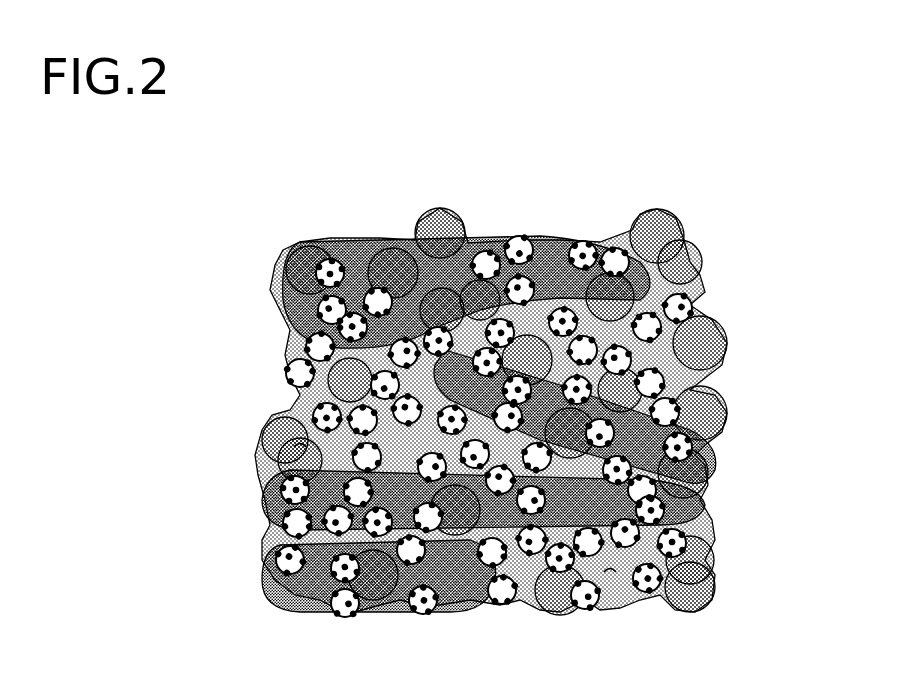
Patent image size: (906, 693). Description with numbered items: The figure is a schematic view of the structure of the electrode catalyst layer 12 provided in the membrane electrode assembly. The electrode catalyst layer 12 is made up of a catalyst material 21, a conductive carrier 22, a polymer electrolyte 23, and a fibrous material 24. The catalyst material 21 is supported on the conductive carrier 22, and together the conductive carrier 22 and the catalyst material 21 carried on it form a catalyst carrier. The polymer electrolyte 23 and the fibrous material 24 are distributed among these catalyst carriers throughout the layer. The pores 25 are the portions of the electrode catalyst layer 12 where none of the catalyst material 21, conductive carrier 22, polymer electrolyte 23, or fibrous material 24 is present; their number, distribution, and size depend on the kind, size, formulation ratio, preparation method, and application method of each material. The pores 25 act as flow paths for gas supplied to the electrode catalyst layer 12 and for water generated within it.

The electrode catalyst layer 12 is at (709, 187).
The catalyst material 21 is at (336, 258).
The conductive carrier 22 is at (694, 305).
The polymer electrolyte 23 is at (656, 207).
The fibrous material 24 is at (283, 272).
The pores 25 is at (292, 446).